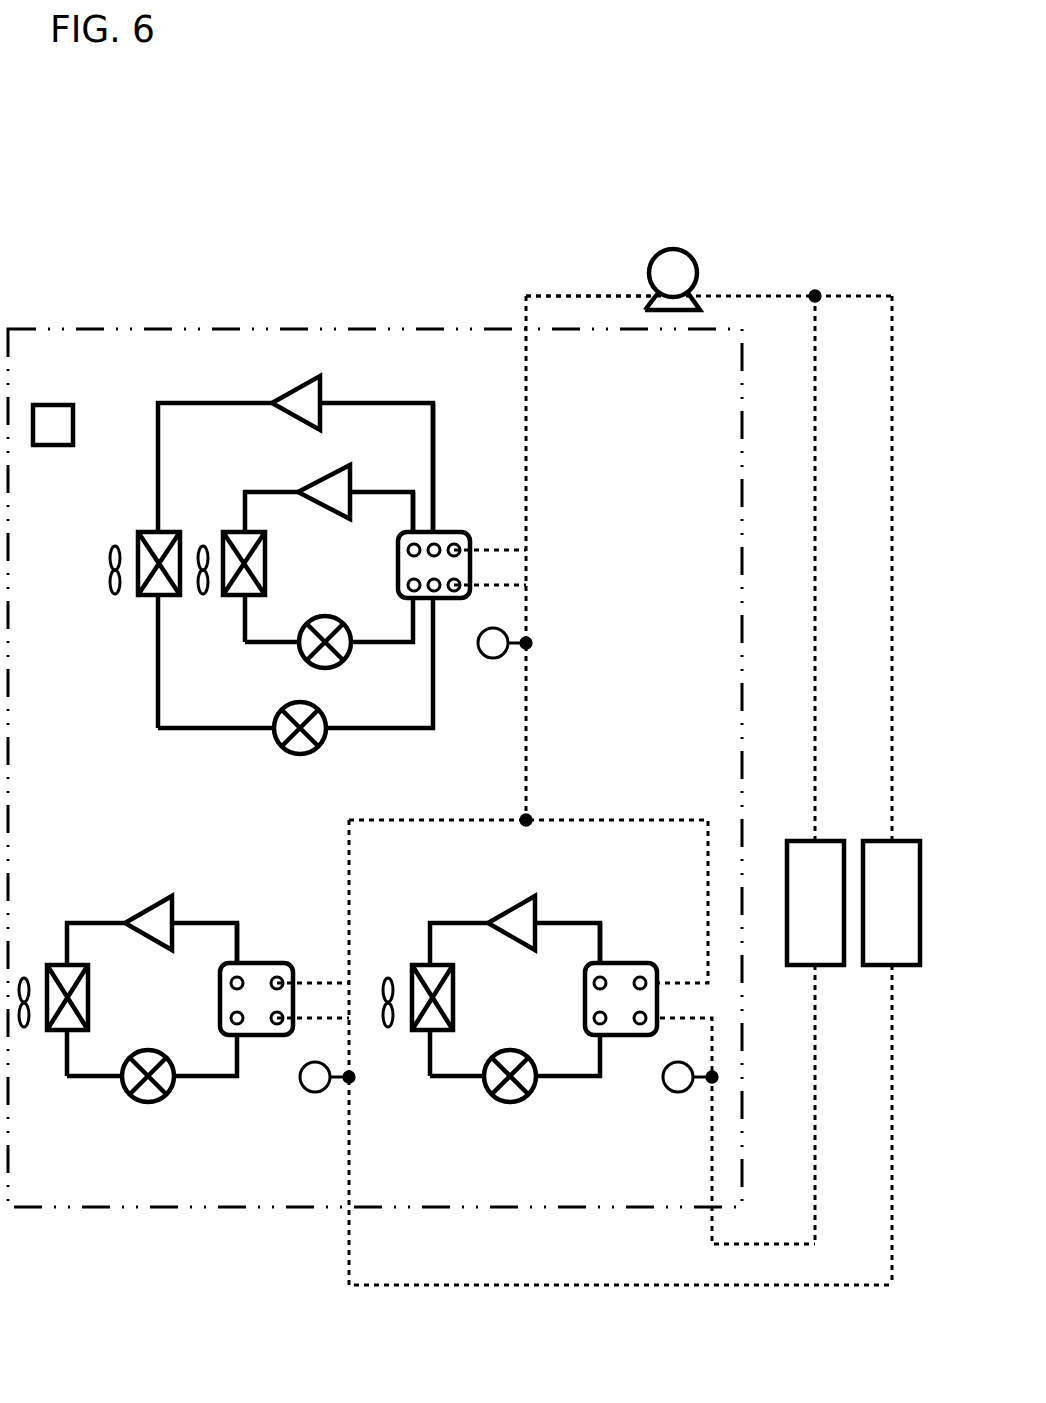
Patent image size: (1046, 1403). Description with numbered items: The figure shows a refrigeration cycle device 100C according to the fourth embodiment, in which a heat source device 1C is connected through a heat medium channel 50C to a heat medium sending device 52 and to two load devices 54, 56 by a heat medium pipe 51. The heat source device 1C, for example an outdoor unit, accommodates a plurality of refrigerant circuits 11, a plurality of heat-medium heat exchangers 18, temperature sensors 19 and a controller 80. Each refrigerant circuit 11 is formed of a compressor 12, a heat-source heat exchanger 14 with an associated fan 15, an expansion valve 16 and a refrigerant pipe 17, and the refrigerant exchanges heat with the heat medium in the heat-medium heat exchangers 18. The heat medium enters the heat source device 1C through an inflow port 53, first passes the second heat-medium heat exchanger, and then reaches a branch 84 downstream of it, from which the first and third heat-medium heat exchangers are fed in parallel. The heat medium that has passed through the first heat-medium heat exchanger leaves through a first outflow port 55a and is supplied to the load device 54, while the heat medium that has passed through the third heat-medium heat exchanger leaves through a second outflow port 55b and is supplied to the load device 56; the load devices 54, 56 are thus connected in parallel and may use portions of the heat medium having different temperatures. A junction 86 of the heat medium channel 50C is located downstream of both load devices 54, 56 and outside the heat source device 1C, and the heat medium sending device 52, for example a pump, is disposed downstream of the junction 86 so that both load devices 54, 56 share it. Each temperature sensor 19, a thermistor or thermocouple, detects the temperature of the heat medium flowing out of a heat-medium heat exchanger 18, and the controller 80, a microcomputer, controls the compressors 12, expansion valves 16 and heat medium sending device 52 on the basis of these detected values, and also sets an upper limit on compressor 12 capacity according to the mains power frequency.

The refrigeration cycle device 100C is at (212, 203).
The heat source device 1C is at (92, 320).
The heat medium channel 50C is at (752, 296).
The heat medium pipe 51 is at (575, 296).
The heat medium sending device 52 is at (657, 256).
The inflow port 53 is at (512, 320).
The load device 54 is at (875, 965).
The first outflow port 55a is at (346, 1209).
The second outflow port 55b is at (712, 1209).
The load device 56 is at (800, 965).
The controller 80 is at (55, 445).
The branch 84 is at (532, 816).
The junction 86 is at (820, 290).
The refrigerant circuit 11 is at (405, 403).
The compressor 12 is at (288, 392).
The heat-source heat exchanger 14 is at (160, 532).
The fan 15 is at (115, 595).
The expansion valve 16 is at (282, 712).
The refrigerant pipe 17 is at (568, 1120).
The heat-medium heat exchanger 18 is at (448, 530).
The temperature sensor 19 is at (488, 660).